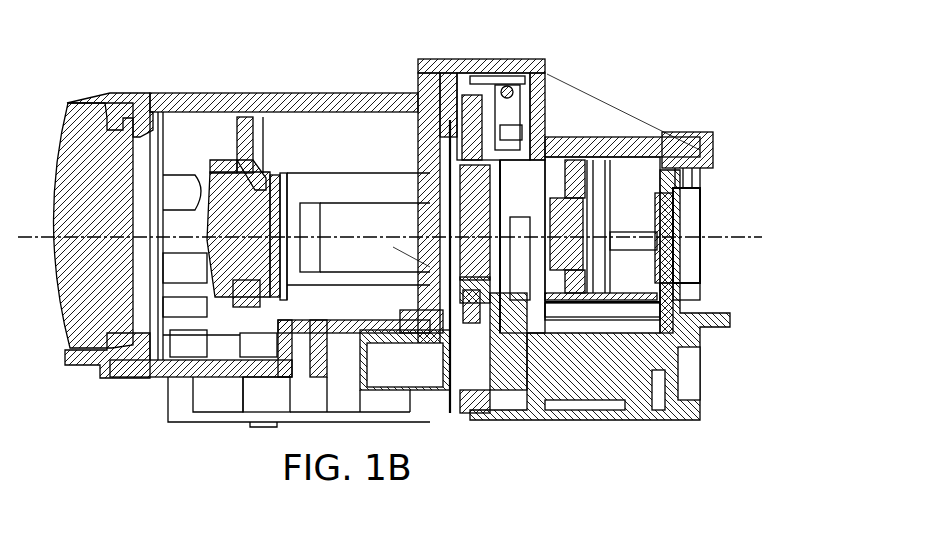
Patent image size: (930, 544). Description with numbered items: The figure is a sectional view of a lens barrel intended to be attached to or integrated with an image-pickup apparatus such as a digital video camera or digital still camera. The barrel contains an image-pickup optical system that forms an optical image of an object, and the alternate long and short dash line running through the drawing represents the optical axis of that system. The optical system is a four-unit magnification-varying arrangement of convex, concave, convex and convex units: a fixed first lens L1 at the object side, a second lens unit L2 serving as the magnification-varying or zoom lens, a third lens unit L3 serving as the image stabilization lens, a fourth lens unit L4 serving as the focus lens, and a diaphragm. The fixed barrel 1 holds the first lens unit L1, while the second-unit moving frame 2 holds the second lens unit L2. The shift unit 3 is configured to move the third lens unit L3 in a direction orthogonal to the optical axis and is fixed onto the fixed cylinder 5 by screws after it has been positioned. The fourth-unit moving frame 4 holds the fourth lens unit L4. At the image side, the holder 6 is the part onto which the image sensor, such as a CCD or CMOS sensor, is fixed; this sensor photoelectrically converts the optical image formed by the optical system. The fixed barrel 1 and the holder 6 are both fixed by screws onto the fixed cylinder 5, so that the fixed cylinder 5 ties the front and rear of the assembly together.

The fixed barrel 1 is at (108, 100).
The second-unit moving frame 2 is at (248, 128).
The shift unit 3 is at (456, 178).
The fourth-unit moving frame 4 is at (585, 178).
The fixed cylinder 5 is at (313, 110).
The holder 6 is at (687, 150).
The first lens unit L1 is at (67, 196).
The second lens unit L2 is at (257, 253).
The third lens unit L3 is at (480, 224).
The fourth lens unit L4 is at (582, 255).